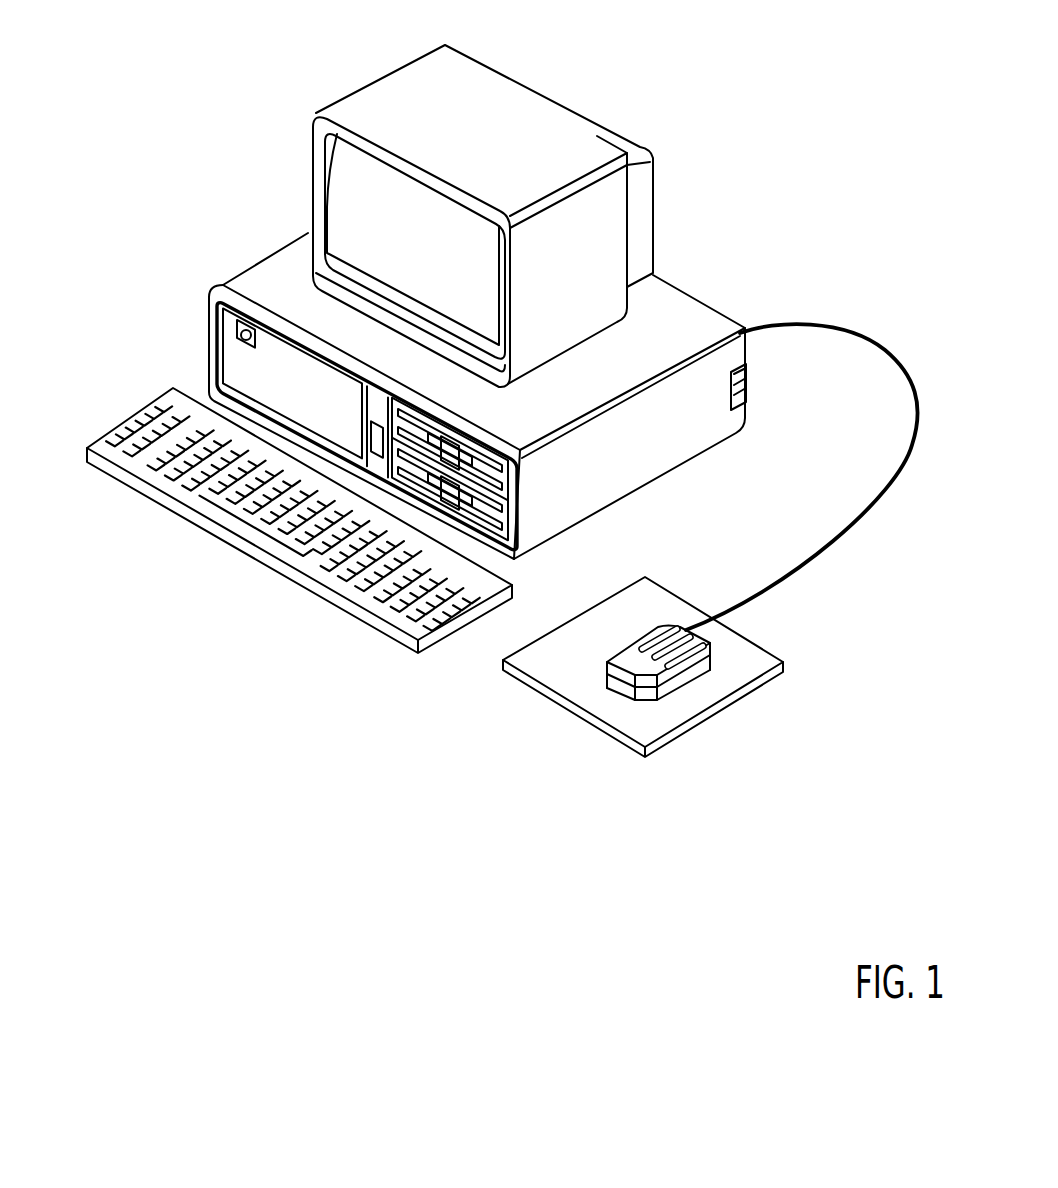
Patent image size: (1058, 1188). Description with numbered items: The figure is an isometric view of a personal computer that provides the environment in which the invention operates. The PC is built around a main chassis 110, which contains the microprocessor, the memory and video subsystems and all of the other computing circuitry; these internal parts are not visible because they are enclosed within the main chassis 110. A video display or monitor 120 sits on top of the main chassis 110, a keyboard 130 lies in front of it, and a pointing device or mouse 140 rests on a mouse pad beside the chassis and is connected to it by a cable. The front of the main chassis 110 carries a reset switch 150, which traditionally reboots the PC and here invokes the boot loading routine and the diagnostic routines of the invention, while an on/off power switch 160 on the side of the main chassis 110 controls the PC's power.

The main chassis 110 is at (688, 311).
The video display or monitor 120 is at (537, 103).
The keyboard 130 is at (102, 447).
The pointing device or mouse 140 is at (690, 660).
The reset switch 150 is at (236, 325).
The on/off power switch 160 is at (738, 380).